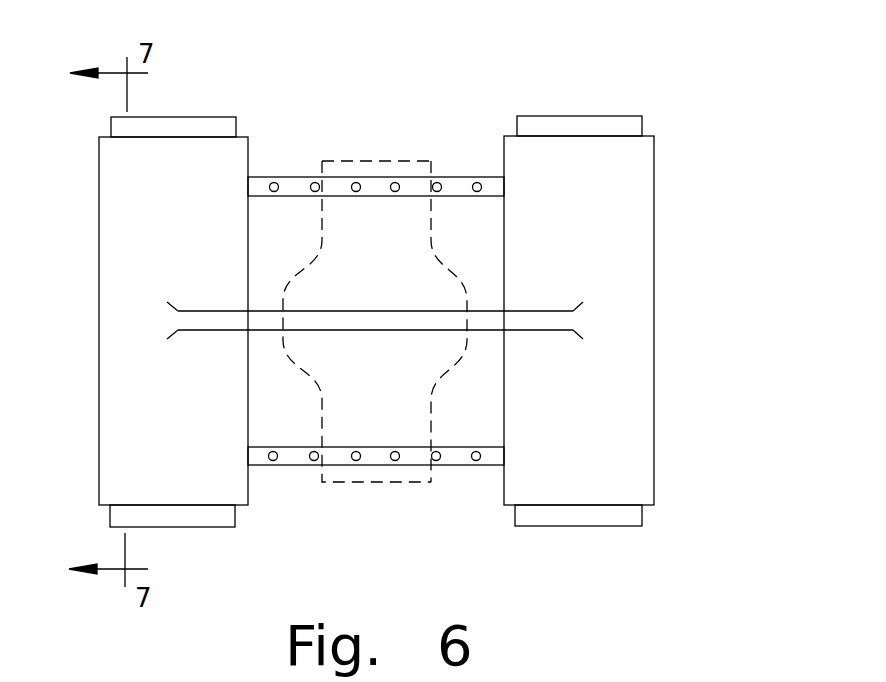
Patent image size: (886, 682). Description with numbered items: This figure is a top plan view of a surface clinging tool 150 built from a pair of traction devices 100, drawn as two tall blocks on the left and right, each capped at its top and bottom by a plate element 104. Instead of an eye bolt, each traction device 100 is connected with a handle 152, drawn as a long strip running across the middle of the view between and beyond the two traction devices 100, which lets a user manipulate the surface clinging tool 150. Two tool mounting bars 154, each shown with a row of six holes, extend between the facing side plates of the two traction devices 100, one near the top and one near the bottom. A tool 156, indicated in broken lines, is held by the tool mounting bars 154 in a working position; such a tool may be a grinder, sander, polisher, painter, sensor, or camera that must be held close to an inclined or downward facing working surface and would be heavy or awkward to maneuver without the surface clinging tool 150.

The traction device 100 is at (98, 178).
The connector cap 104 is at (212, 117).
The surface clinging tool 150 is at (739, 85).
The handle 152 is at (362, 320).
The tool mounting bar 154 is at (298, 185).
The tool 156 is at (408, 160).